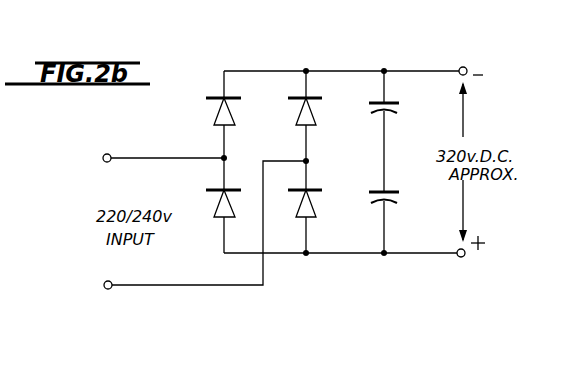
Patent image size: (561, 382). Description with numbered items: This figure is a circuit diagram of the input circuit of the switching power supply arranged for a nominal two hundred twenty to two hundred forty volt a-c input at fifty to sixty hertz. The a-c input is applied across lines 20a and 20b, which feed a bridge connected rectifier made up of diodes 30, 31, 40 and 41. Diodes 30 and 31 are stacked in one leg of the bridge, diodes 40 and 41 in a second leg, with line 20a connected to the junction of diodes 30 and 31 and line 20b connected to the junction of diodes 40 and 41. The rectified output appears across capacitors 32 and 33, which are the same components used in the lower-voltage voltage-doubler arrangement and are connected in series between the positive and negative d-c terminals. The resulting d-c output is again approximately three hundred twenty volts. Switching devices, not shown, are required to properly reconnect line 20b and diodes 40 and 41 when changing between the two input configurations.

The input line 20a is at (175, 157).
The input line 20b is at (194, 284).
The diode 30 is at (234, 118).
The diode 31 is at (236, 202).
The diode 40 is at (316, 118).
The diode 41 is at (314, 205).
The capacitor 32 is at (400, 108).
The capacitor 33 is at (397, 200).